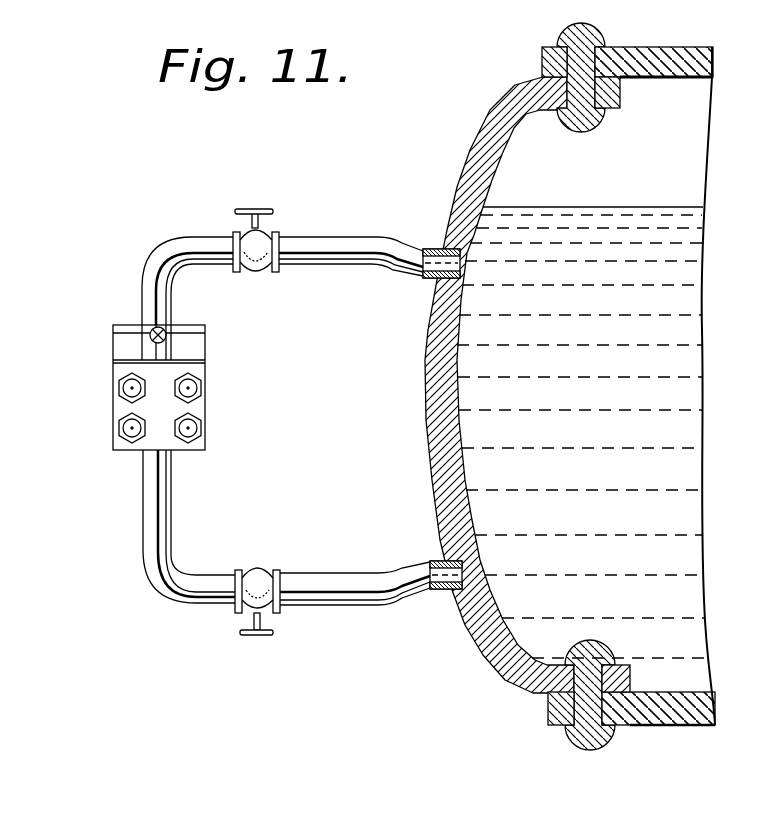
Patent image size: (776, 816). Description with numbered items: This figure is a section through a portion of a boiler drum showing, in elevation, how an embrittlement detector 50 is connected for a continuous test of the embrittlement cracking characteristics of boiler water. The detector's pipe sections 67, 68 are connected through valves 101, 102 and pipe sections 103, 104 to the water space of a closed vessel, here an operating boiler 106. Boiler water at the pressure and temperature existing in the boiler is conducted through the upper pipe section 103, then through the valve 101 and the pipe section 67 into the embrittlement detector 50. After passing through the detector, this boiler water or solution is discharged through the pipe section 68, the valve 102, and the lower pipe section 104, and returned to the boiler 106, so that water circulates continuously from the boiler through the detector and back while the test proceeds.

The embrittlement detector 50 is at (112, 386).
The pipe section 67 is at (154, 297).
The pipe section 68 is at (160, 503).
The valve 101 is at (262, 276).
The valve 102 is at (277, 553).
The pipe section 103 is at (388, 266).
The pipe section 104 is at (363, 571).
The operating boiler 106 is at (466, 176).